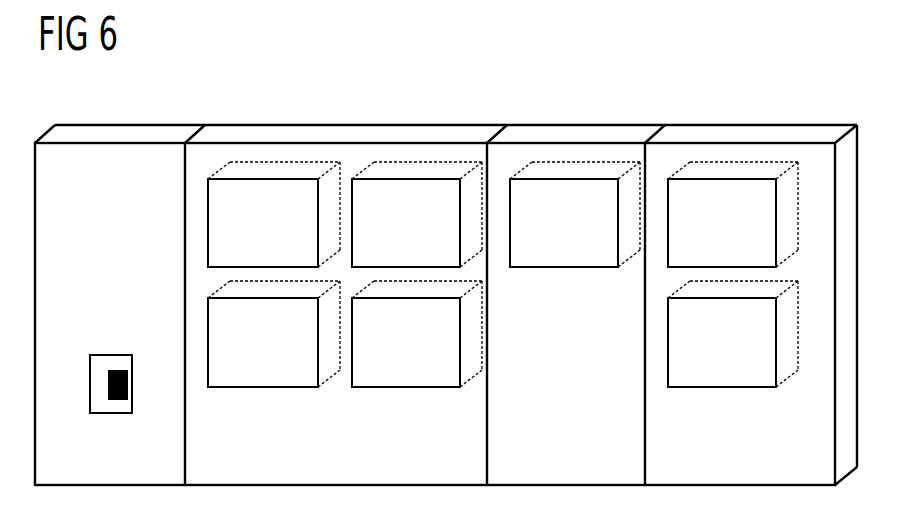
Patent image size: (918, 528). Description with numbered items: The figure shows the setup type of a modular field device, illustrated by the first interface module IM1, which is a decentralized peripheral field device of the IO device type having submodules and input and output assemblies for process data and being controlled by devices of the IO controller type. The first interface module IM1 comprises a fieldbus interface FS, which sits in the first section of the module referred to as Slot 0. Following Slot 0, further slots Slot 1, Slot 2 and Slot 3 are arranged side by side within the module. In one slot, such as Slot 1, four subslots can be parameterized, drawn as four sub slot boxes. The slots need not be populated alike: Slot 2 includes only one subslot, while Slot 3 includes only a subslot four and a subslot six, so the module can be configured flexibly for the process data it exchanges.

The first interface module IM1 is at (110, 244).
The fieldbus interface FS is at (108, 355).
The slot 0 Slot 0 is at (120, 305).
The slot 1 Slot 1 is at (346, 305).
The slot 2 Slot 2 is at (576, 305).
The slot 3 Slot 3 is at (740, 314).